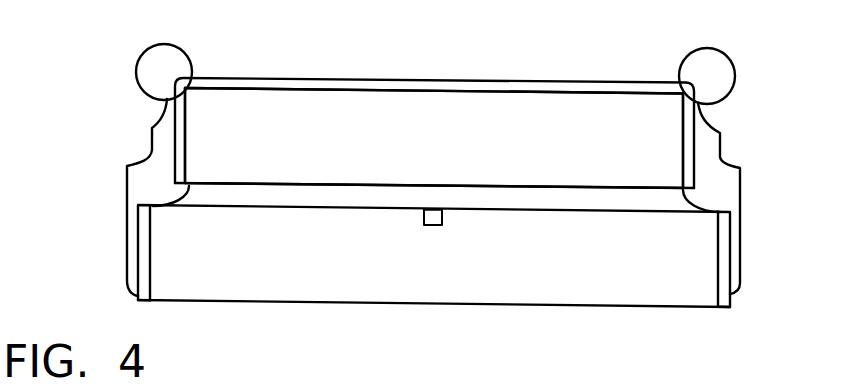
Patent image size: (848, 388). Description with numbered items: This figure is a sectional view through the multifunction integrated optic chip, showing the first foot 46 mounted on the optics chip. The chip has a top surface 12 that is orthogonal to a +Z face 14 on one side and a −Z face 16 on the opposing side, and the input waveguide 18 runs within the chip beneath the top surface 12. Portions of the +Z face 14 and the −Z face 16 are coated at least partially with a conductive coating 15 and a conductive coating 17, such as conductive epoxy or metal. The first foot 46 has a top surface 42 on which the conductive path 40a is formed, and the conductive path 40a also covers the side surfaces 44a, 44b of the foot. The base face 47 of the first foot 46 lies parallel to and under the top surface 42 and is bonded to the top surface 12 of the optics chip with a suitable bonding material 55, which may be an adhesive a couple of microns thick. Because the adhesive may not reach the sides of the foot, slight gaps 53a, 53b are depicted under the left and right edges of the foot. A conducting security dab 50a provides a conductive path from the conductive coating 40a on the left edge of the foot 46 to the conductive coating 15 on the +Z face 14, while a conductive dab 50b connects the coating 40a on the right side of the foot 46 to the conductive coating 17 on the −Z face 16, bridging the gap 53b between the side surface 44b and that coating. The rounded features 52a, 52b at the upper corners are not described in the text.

The top surface 12 is at (247, 208).
The +Z face 14 is at (150, 247).
The conductive coating 15 is at (137, 300).
The −Z face 16 is at (718, 247).
The conductive coating 17 is at (730, 305).
The input waveguide 18 is at (442, 215).
The conductive path 40a is at (368, 85).
The top surface 42 is at (618, 93).
The side surface 44a is at (186, 134).
The side surface 44b is at (683, 143).
The first foot 46 is at (433, 167).
The base face 47 is at (453, 185).
The conducting security dab 50a is at (133, 197).
The conductive dab 50b is at (715, 180).
The left hinge knob 52a is at (162, 57).
The right hinge knob 52b is at (712, 62).
The gap 53a is at (183, 194).
The gap 53b is at (695, 203).
The bonding material 55 is at (418, 198).